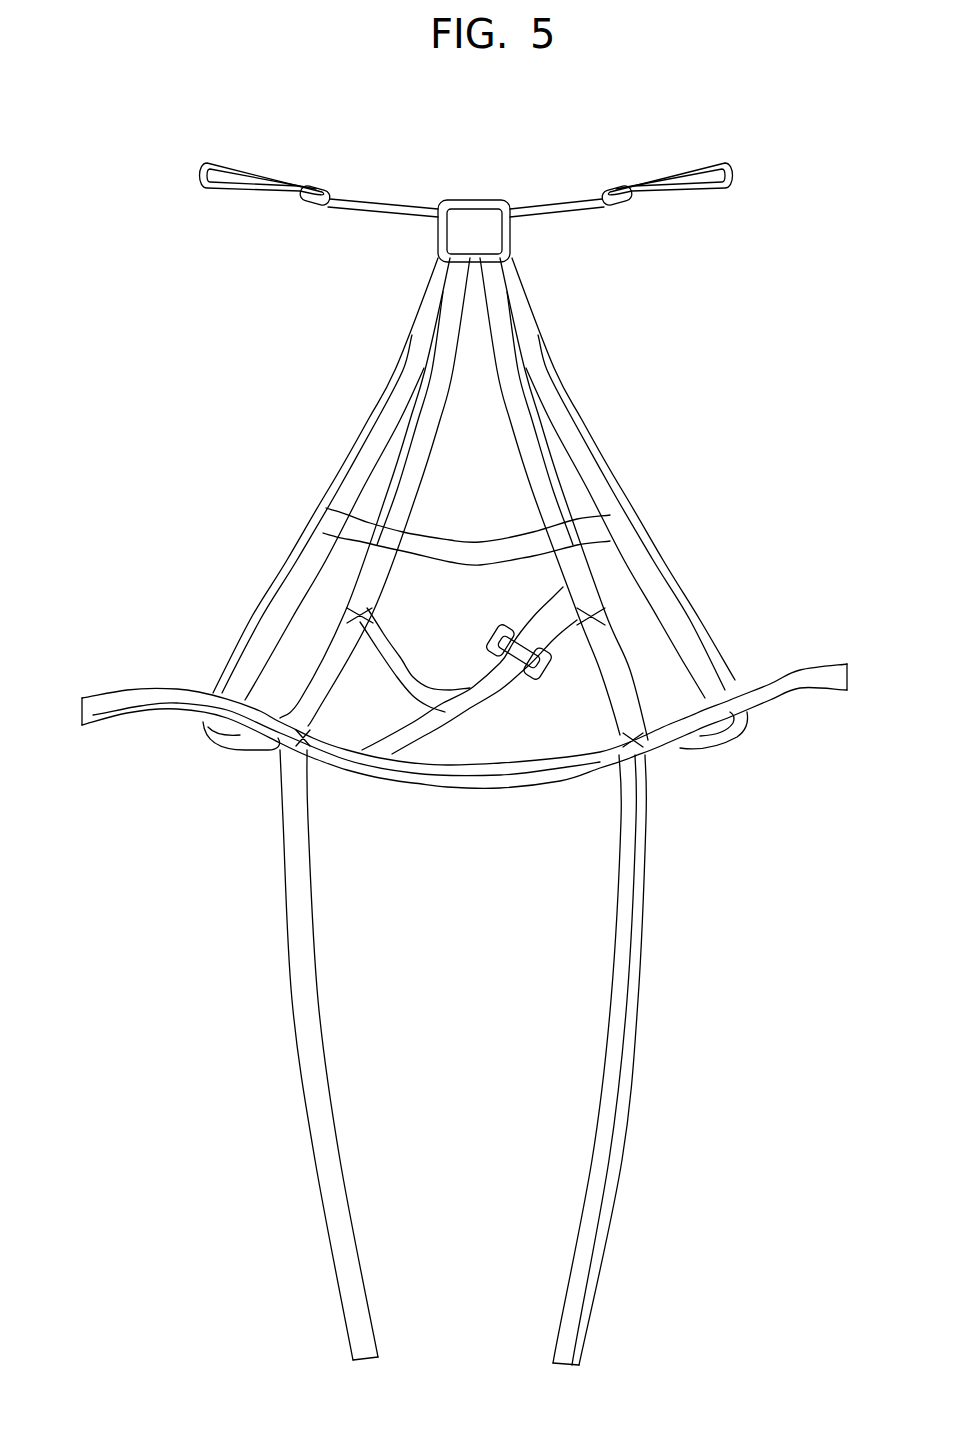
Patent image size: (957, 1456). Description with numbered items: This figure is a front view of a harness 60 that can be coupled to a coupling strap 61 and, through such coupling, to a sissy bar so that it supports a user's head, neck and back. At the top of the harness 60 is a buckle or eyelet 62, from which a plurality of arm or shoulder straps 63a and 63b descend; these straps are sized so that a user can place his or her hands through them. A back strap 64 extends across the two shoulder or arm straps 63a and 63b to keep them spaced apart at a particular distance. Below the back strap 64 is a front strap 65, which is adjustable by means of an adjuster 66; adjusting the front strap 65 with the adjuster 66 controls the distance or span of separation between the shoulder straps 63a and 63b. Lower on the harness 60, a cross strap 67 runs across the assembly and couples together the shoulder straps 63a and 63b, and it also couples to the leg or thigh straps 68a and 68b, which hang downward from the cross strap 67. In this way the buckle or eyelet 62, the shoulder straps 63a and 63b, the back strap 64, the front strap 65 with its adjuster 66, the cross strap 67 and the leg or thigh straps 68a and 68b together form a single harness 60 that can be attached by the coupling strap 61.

The harness 60 is at (404, 176).
The coupling strap 61 is at (200, 173).
The buckle or eyelet 62 is at (485, 200).
The shoulder strap 63a is at (397, 362).
The shoulder strap 63b is at (540, 349).
The back strap 64 is at (469, 547).
The front strap 65 is at (465, 685).
The adjuster 66 is at (533, 667).
The cross strap 67 is at (446, 773).
The leg or thigh strap 68a is at (292, 966).
The leg or thigh strap 68b is at (627, 982).